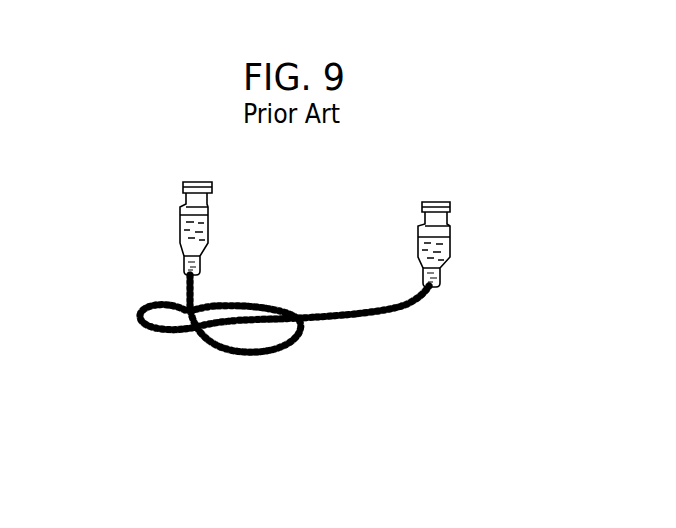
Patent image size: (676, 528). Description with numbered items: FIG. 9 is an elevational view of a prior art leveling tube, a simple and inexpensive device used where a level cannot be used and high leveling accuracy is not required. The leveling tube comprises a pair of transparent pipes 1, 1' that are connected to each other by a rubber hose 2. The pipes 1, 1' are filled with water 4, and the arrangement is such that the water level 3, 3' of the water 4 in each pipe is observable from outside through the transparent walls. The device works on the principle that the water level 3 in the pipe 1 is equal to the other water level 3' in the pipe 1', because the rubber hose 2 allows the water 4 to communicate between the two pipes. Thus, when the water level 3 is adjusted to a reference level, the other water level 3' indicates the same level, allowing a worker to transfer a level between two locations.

The transparent pipe 1 is at (186, 223).
The transparent pipe 1' is at (478, 219).
The rubber hose 2 is at (357, 322).
The water level 3 is at (157, 188).
The water level 3' is at (477, 185).
The water 4 is at (183, 237).